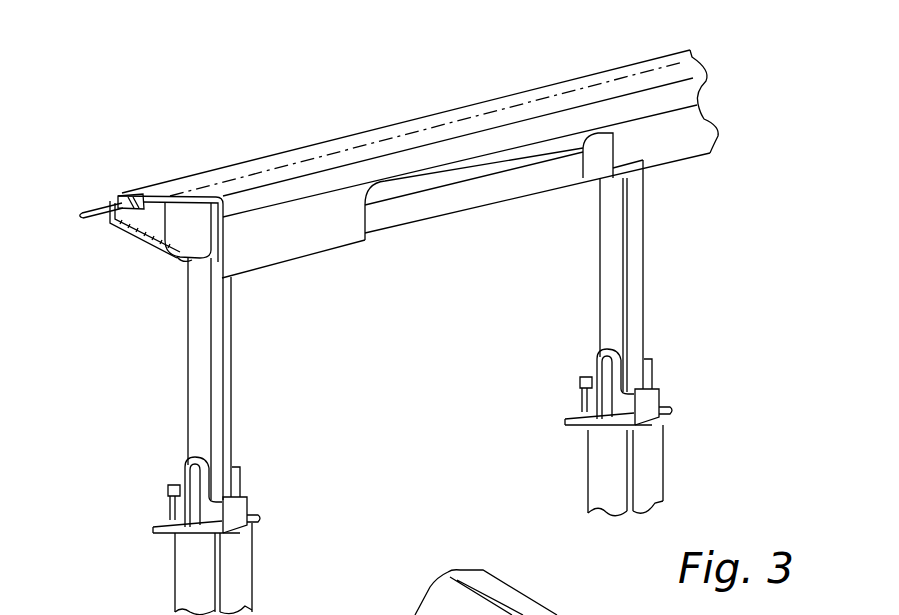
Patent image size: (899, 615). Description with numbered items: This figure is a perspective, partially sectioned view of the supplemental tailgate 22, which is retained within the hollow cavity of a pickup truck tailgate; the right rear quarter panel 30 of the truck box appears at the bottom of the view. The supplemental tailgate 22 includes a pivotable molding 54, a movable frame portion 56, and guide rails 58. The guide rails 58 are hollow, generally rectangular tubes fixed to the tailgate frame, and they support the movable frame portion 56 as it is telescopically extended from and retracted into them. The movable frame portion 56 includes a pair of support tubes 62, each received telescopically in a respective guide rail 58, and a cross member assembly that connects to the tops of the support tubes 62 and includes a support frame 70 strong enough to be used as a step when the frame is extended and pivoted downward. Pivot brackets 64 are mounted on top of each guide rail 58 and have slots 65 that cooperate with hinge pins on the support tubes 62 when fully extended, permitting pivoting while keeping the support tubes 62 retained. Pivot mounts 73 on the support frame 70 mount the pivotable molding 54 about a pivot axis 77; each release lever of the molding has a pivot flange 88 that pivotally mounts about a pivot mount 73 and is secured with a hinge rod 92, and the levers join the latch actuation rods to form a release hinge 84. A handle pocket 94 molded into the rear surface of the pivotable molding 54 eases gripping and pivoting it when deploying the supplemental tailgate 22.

The supplemental tailgate 22 is at (459, 144).
The right rear quarter panel 30 is at (456, 575).
The pivotable molding 54 is at (407, 121).
The movable frame portion 56 is at (455, 387).
The guide rails 58 is at (253, 565).
The support tubes 62 is at (233, 378).
The pivot brackets 64 is at (428, 423).
The slots 65 is at (185, 485).
The support frame 70 is at (177, 257).
The pivot mounts 73 is at (117, 229).
The pivot axis 77 is at (690, 50).
The release hinge 84 is at (130, 212).
The pivot flange 88 is at (117, 197).
The hinge rod 92 is at (86, 211).
The handle pocket 94 is at (367, 224).